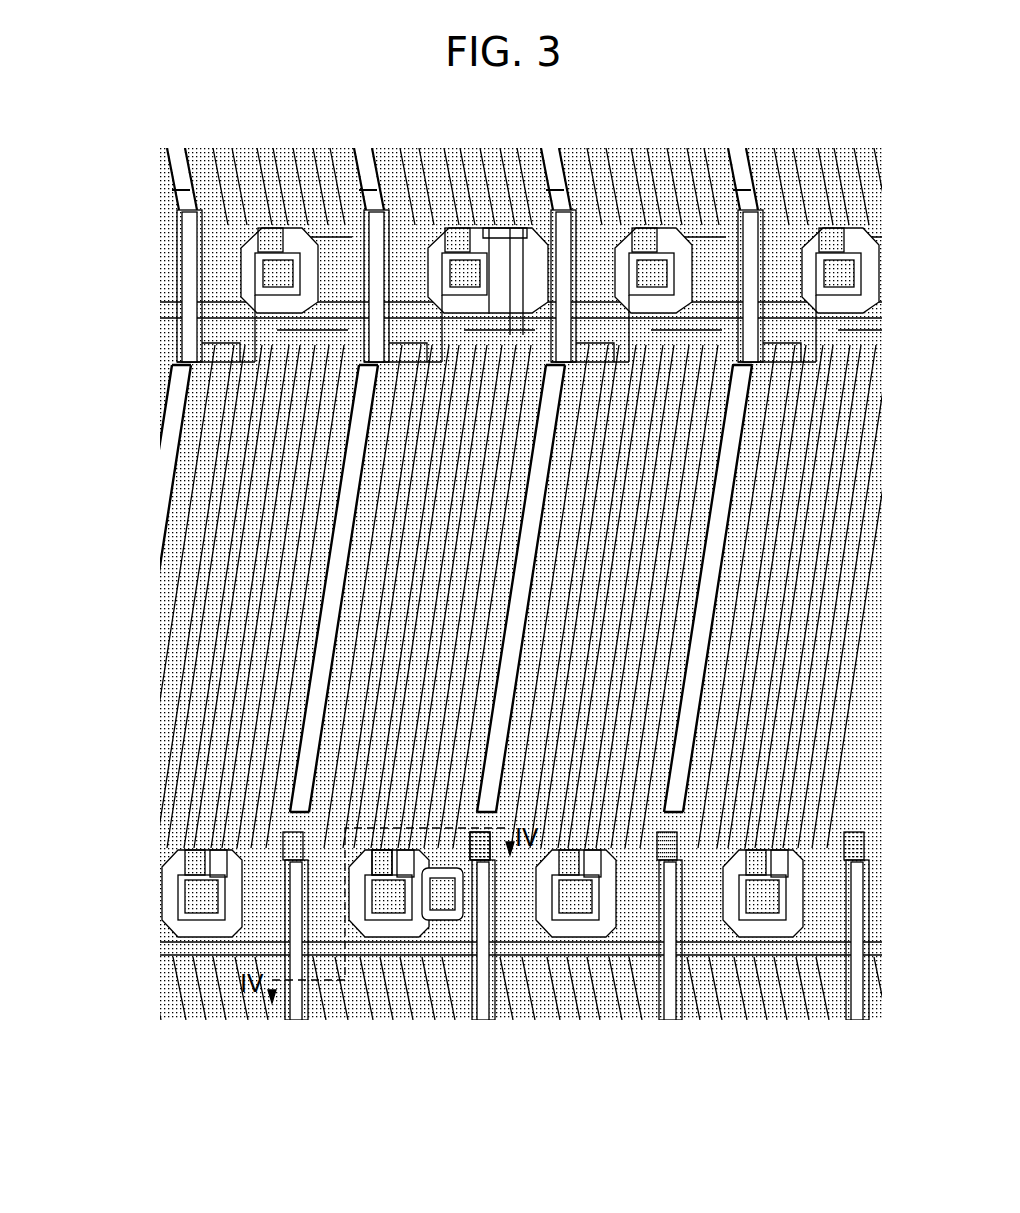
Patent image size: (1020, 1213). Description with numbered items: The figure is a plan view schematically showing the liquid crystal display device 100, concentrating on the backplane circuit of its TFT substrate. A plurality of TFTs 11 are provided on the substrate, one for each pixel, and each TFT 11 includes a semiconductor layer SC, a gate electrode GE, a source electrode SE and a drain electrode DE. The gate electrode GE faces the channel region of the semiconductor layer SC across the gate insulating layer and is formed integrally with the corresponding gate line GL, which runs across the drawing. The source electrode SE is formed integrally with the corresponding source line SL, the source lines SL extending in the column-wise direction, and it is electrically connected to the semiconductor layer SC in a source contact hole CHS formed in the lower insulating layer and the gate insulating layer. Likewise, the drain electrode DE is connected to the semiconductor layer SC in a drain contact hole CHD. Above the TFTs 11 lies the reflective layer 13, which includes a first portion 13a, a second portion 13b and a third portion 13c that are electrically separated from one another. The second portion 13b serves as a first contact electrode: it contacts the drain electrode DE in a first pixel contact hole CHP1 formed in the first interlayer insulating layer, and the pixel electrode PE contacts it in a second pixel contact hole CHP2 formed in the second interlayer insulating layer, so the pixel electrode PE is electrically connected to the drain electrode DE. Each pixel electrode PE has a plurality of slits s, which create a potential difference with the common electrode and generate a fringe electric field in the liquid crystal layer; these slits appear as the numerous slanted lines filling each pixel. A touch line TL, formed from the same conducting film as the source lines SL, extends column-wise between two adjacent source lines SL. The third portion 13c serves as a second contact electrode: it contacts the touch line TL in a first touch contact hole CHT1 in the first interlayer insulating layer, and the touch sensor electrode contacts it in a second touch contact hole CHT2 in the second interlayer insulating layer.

The liquid crystal display device 100 is at (916, 157).
The slit s is at (410, 495).
The pixel electrode PE is at (452, 596).
The first portion 13a is at (335, 616).
The reflective layer 13 is at (502, 584).
The source line SL is at (427, 588).
The source contact hole CHS is at (480, 846).
The source electrode SE is at (170, 858).
The drain contact hole CHD is at (380, 865).
The second portion 13b is at (175, 928).
The gate line GL is at (521, 628).
The gate electrode GE is at (535, 584).
The semiconductor layer SC is at (322, 960).
The TFT 11 is at (341, 980).
The drain electrode DE is at (422, 926).
The touch line TL is at (442, 894).
The third portion 13c is at (490, 1000).
The first touch contact hole CHT1 is at (443, 905).
The second touch contact hole CHT2 is at (555, 1111).
The first pixel contact hole CHP1 is at (388, 905).
The second pixel contact hole CHP2 is at (464, 1146).